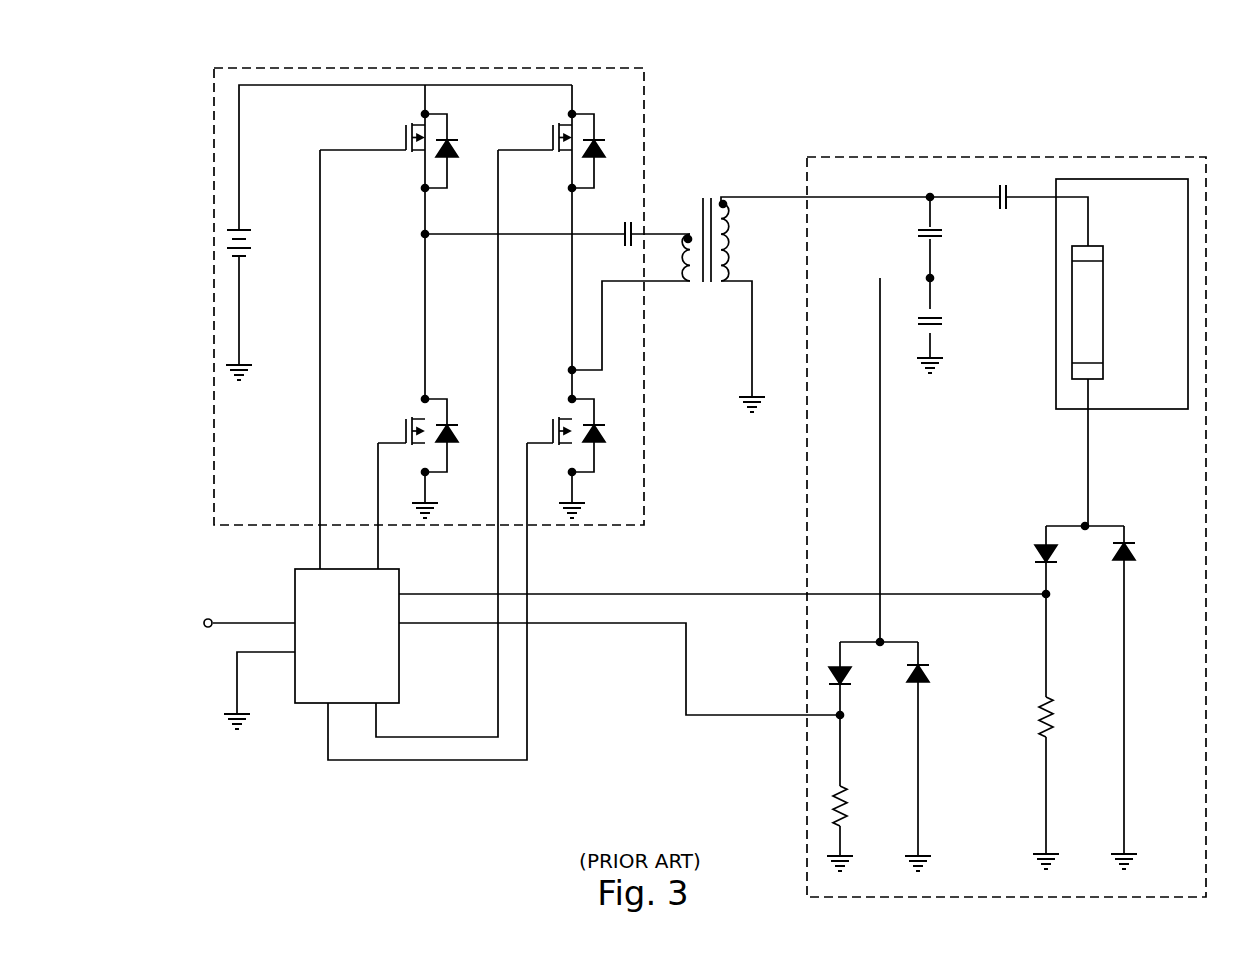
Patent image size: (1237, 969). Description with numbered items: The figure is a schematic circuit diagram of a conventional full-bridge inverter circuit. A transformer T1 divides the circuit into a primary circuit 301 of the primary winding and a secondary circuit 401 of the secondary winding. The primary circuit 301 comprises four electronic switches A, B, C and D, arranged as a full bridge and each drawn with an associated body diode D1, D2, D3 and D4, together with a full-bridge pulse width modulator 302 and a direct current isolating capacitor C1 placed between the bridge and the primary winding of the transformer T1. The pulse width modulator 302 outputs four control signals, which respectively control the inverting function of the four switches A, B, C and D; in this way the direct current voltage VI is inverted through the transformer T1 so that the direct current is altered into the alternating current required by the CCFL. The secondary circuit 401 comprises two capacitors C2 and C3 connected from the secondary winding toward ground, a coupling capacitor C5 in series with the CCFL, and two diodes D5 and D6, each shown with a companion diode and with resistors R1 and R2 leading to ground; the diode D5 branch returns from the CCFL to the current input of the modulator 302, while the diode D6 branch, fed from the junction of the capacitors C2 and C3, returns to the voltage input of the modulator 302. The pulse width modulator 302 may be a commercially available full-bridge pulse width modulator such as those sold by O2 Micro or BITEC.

The primary circuit 301 is at (386, 68).
The full-bridge pulse width modulator 302 is at (295, 569).
The secondary circuit 401 is at (903, 157).
The transformer T1 is at (841, 295).
The direct current isolating capacitor C1 is at (631, 224).
The capacitor C2 is at (941, 239).
The capacitor C3 is at (941, 327).
The capacitor C5 is at (1006, 189).
The body diode D1 is at (452, 151).
The body diode D2 is at (452, 435).
The body diode D3 is at (599, 151).
The body diode D4 is at (599, 435).
The diode D5 is at (1136, 550).
The diode D6 is at (929, 657).
The resistor R1 is at (1057, 717).
The resistor R2 is at (852, 806).
The cold cathode fluorescent lamp CCFL is at (1122, 352).